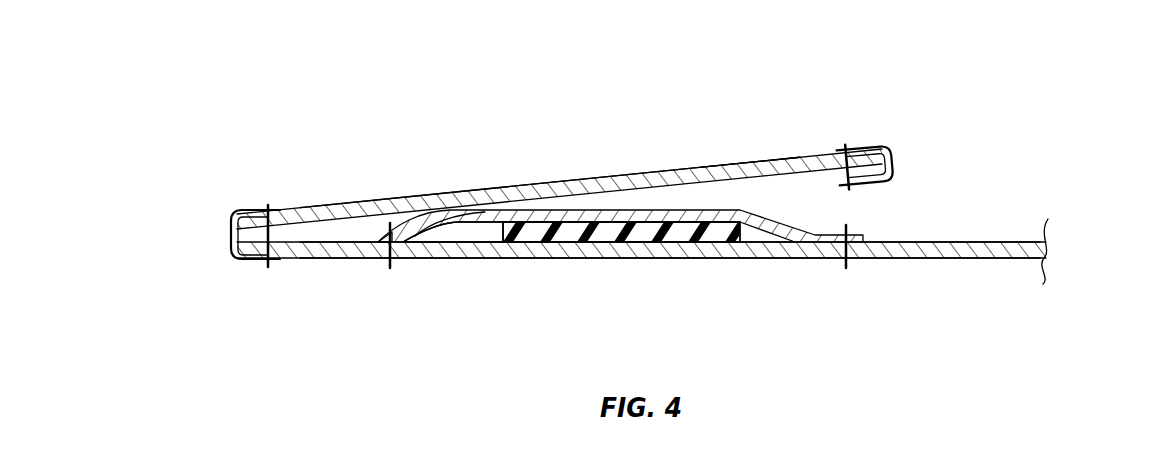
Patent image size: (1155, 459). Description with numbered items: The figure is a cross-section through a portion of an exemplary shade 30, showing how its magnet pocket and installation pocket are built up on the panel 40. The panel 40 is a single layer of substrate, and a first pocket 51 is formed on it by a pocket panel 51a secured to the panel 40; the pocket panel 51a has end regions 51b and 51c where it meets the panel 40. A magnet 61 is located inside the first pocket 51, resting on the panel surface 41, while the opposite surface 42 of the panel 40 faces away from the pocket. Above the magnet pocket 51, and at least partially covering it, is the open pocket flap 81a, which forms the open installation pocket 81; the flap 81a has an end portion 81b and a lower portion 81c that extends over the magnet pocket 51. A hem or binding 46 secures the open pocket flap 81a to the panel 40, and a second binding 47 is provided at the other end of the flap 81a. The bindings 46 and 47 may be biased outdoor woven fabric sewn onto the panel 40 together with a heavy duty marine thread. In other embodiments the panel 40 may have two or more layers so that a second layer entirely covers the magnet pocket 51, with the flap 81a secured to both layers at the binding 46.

The shade 30 is at (211, 87).
The panel 40 is at (672, 232).
The panel surface 41 is at (950, 242).
The second surface of base plate 42 is at (950, 258).
The binding 46 is at (230, 226).
The binding 47 is at (891, 158).
The first pocket 51 is at (511, 200).
The pocket panel 51a is at (555, 215).
The first end of heat transfer layer 51b is at (385, 230).
The side portion of heat transfer layer 51c is at (487, 224).
The magnet 61 is at (663, 235).
The open installation pocket 81 is at (659, 168).
The open pocket flap 81a is at (455, 180).
The end portion of heat spreader plate 81b is at (747, 163).
The lower contact portion of heat spreader plate 81c is at (757, 180).